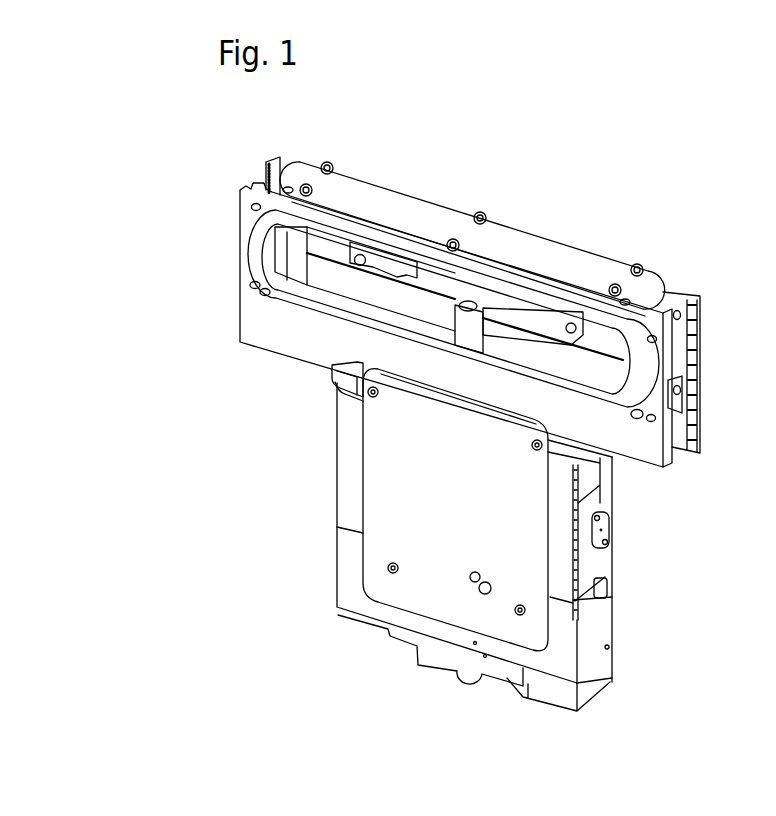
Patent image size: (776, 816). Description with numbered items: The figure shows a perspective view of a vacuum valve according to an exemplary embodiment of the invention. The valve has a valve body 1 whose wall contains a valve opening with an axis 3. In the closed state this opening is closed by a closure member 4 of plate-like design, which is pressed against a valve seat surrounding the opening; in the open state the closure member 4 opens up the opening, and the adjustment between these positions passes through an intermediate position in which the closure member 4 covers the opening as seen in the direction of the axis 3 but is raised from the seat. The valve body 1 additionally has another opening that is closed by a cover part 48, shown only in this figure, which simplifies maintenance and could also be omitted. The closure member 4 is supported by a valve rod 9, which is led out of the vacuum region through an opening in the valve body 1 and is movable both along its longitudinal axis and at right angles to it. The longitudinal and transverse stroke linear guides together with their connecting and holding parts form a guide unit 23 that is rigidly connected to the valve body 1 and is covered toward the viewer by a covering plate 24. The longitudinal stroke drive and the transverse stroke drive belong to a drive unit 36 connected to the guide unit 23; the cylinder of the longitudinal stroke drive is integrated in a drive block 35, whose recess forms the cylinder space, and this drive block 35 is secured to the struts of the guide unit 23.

The valve body 1 is at (260, 322).
The axis 3 is at (513, 228).
The closure member 4 is at (322, 243).
The valve rod 9 is at (478, 331).
The guide unit 23 is at (313, 466).
The covering plate 24 is at (400, 593).
The drive block 35 is at (560, 655).
The drive unit 36 is at (313, 577).
The cover part 48 is at (345, 186).